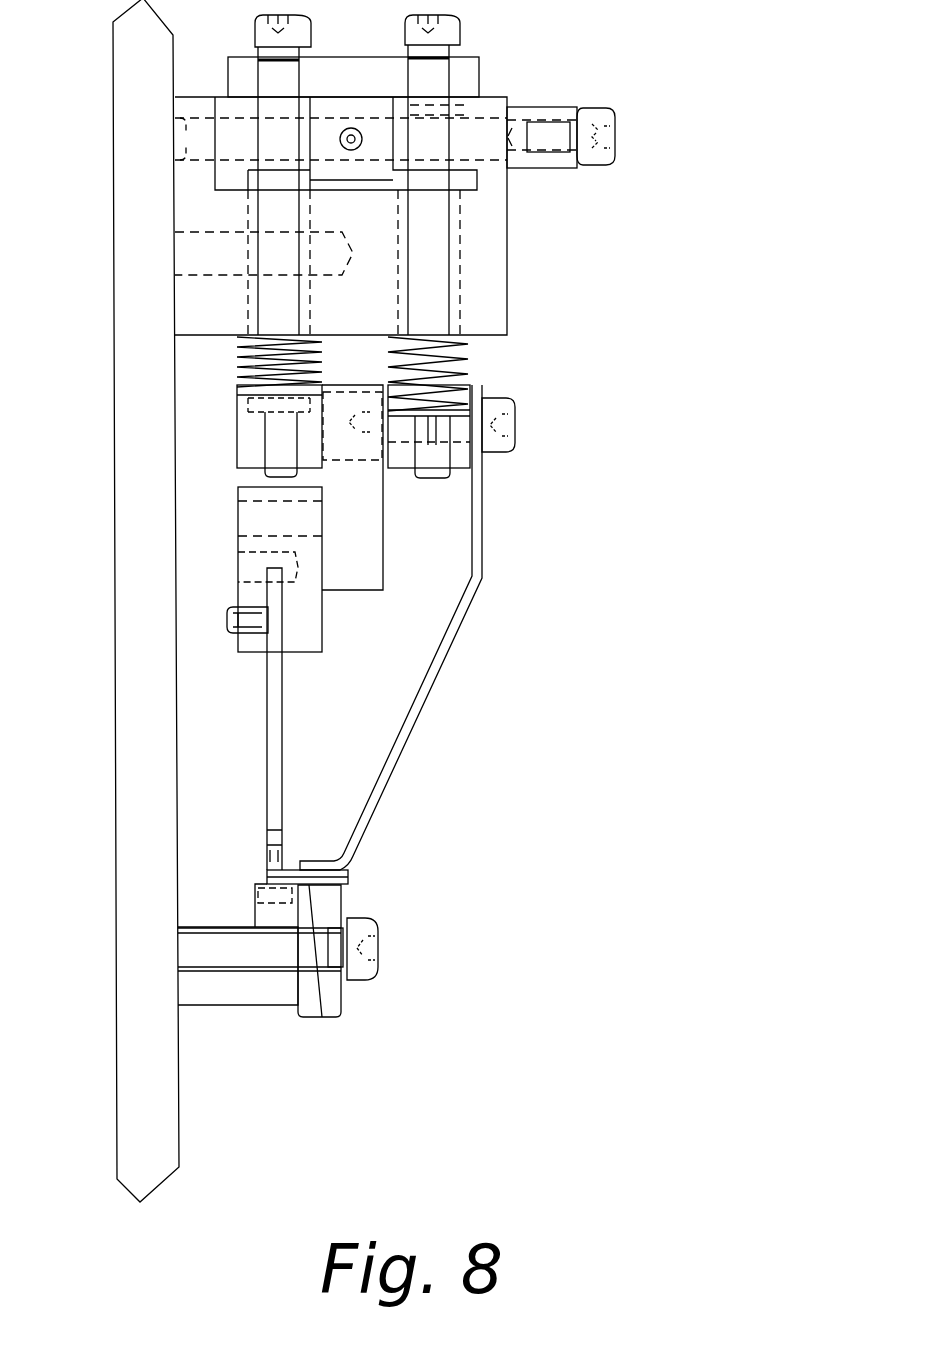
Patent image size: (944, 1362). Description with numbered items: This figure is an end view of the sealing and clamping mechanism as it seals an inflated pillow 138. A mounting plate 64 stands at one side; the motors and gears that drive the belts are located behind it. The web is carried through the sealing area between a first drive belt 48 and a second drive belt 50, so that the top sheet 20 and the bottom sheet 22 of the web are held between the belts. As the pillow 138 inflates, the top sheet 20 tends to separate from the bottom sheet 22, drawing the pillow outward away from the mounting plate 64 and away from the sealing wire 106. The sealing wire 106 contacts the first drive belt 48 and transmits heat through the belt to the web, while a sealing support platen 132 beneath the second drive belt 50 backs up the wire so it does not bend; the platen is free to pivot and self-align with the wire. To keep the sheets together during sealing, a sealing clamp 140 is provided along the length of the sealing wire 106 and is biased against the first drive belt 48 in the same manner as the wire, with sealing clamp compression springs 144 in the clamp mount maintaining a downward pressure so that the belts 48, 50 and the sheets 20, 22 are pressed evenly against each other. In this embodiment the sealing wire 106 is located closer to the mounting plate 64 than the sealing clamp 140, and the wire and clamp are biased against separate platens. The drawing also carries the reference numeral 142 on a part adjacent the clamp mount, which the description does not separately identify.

The top sheet 20 is at (348, 872).
The bottom sheet 22 is at (348, 878).
The first drive belt 48 is at (350, 868).
The second drive belt 50 is at (350, 888).
The mounting plate 64 is at (121, 852).
The sealing wire 106 is at (277, 863).
The sealing support platen 132 is at (321, 1017).
The inflated pillow 138 is at (452, 970).
The sealing clamp 140 is at (484, 545).
The set screw 142 is at (519, 430).
The sealing clamp compression springs 144 is at (473, 373).